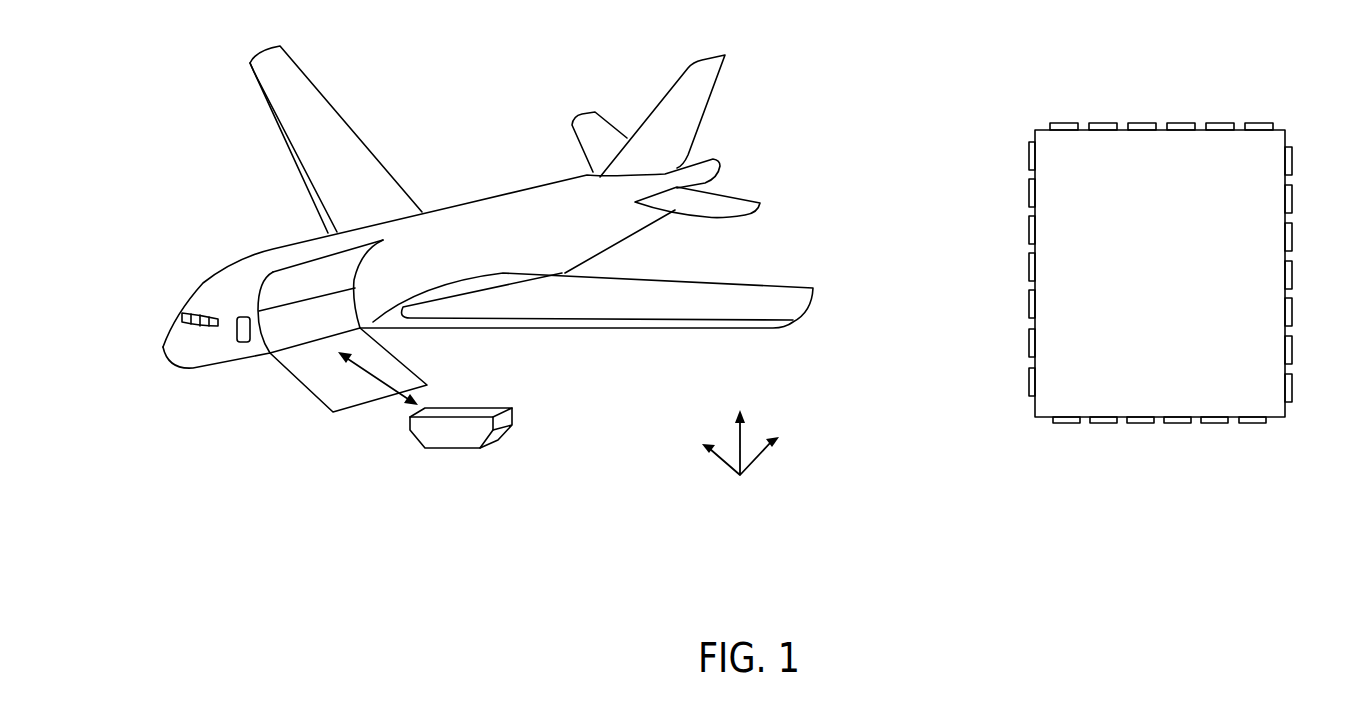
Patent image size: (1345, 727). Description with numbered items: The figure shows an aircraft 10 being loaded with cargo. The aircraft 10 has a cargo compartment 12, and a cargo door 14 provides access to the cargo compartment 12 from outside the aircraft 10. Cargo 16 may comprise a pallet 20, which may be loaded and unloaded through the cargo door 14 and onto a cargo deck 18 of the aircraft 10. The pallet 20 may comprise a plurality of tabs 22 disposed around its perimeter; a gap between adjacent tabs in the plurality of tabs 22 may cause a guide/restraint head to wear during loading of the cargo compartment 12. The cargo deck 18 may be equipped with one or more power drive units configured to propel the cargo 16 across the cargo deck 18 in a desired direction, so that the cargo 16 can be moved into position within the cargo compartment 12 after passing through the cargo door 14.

The aircraft 10 is at (142, 159).
The cargo compartment 12 is at (364, 288).
The cargo door 14 is at (277, 297).
The cargo 16 is at (460, 440).
The cargo deck 18 is at (316, 332).
The pallet 20 is at (1160, 277).
The plurality of tabs 22 is at (1060, 418).